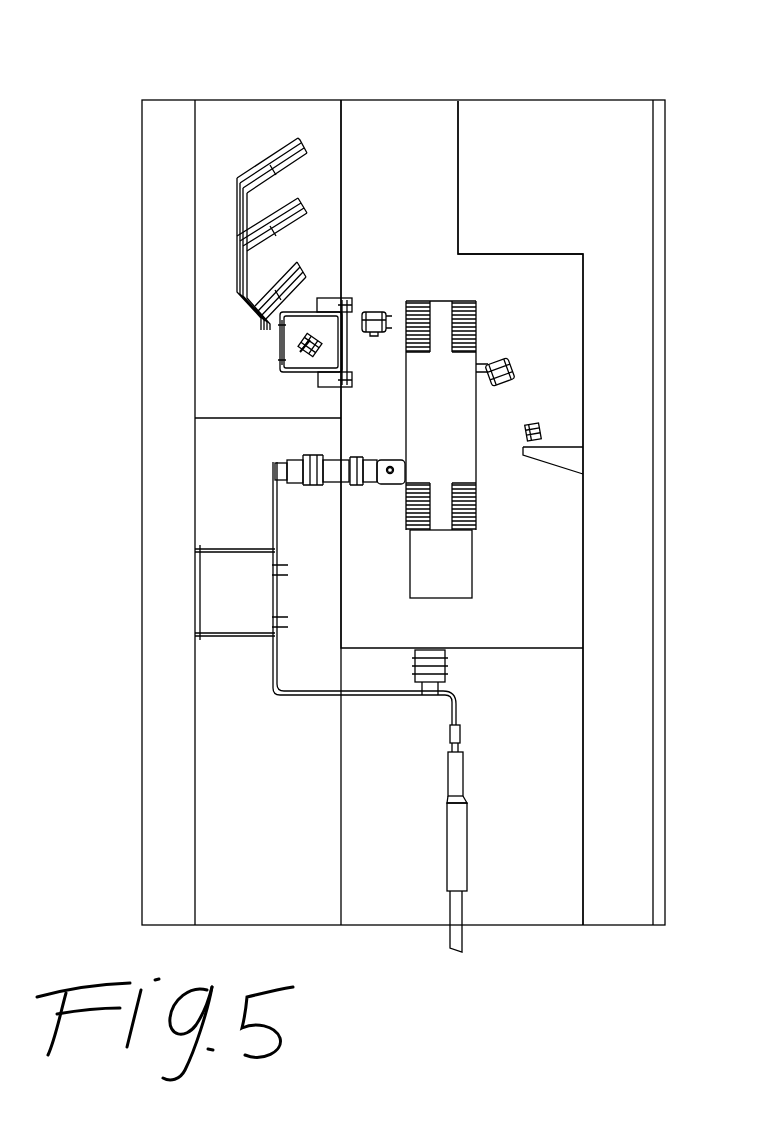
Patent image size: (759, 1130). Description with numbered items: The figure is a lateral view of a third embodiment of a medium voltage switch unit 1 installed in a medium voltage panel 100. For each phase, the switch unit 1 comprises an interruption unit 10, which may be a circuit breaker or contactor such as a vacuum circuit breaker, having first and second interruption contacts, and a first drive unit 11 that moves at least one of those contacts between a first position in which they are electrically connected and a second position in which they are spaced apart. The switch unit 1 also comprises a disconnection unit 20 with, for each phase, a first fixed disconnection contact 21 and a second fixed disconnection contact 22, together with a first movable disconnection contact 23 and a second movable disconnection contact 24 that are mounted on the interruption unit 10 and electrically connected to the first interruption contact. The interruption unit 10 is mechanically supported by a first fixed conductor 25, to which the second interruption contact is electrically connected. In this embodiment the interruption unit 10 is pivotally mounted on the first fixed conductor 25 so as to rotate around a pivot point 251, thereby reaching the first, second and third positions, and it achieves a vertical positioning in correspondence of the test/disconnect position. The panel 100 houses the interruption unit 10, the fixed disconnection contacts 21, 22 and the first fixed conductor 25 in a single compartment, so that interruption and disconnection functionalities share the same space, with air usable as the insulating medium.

The Medium Voltage panel 100 is at (316, 66).
The Medium Voltage switch unit 1 is at (530, 329).
The interruption unit 10 is at (446, 457).
The first drive unit 11 is at (440, 588).
The disconnection unit 20 is at (538, 606).
The first fixed disconnection contact 21 is at (538, 433).
The second fixed disconnection contact 22 is at (300, 348).
The first movable disconnection contact 23 is at (513, 370).
The second movable disconnection contact 24 is at (372, 310).
The first fixed conductor 25 is at (385, 454).
The pivot point 251 is at (388, 474).